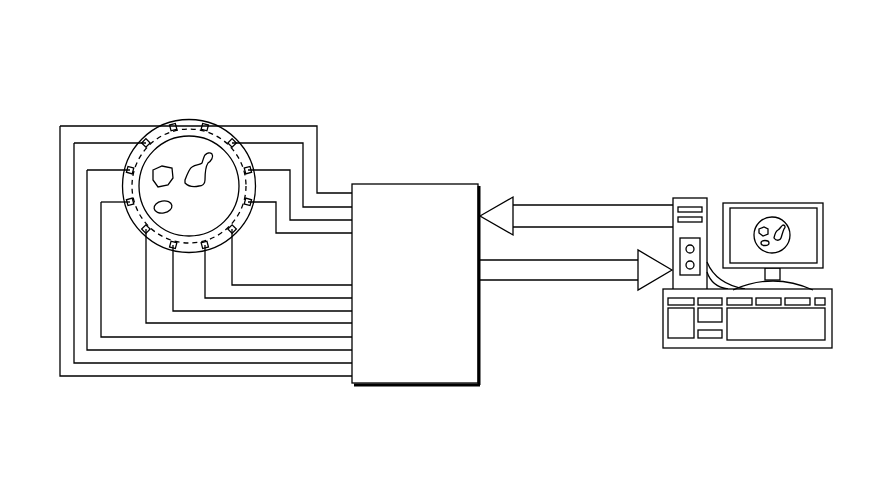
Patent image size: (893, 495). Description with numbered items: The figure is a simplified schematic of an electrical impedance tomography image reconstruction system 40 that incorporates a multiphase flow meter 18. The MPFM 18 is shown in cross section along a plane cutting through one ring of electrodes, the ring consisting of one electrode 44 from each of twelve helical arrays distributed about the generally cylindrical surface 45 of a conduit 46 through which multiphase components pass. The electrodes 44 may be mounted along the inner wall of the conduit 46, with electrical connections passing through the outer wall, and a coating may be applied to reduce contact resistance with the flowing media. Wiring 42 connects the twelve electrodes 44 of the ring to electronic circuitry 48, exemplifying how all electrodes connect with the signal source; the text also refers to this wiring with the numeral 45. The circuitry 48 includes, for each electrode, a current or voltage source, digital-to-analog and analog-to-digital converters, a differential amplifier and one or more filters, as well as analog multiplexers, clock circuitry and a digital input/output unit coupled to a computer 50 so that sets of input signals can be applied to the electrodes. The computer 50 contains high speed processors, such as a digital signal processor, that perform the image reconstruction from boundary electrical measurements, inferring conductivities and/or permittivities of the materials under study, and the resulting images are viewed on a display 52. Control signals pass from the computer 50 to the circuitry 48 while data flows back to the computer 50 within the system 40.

The multiphase flow meter (MPFM) 18 is at (240, 229).
The electrical impedance tomography (EIT) image reconstruction system 40 is at (652, 128).
The wiring 42 is at (229, 382).
The electrodes 44 is at (207, 122).
The surface of the conduit 45 is at (252, 206).
The conduit 46 is at (240, 185).
The electronic circuitry 48 is at (430, 183).
The computer 50 is at (690, 198).
The display 52 is at (773, 202).